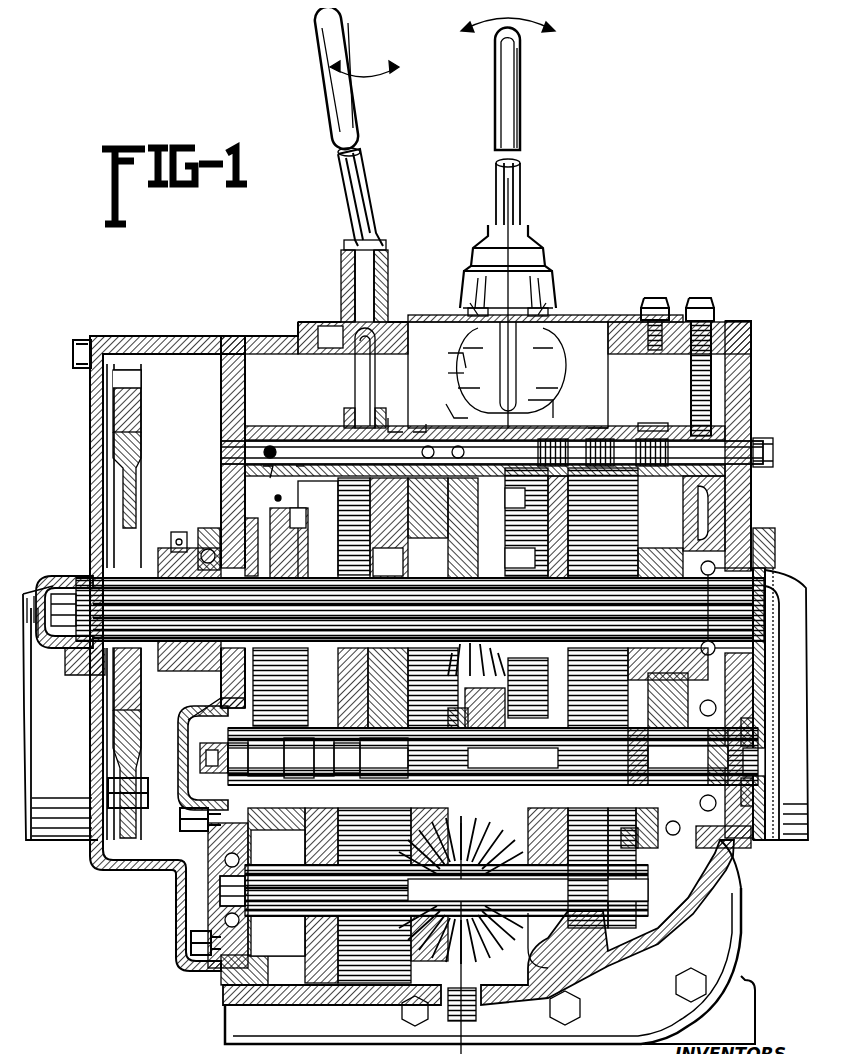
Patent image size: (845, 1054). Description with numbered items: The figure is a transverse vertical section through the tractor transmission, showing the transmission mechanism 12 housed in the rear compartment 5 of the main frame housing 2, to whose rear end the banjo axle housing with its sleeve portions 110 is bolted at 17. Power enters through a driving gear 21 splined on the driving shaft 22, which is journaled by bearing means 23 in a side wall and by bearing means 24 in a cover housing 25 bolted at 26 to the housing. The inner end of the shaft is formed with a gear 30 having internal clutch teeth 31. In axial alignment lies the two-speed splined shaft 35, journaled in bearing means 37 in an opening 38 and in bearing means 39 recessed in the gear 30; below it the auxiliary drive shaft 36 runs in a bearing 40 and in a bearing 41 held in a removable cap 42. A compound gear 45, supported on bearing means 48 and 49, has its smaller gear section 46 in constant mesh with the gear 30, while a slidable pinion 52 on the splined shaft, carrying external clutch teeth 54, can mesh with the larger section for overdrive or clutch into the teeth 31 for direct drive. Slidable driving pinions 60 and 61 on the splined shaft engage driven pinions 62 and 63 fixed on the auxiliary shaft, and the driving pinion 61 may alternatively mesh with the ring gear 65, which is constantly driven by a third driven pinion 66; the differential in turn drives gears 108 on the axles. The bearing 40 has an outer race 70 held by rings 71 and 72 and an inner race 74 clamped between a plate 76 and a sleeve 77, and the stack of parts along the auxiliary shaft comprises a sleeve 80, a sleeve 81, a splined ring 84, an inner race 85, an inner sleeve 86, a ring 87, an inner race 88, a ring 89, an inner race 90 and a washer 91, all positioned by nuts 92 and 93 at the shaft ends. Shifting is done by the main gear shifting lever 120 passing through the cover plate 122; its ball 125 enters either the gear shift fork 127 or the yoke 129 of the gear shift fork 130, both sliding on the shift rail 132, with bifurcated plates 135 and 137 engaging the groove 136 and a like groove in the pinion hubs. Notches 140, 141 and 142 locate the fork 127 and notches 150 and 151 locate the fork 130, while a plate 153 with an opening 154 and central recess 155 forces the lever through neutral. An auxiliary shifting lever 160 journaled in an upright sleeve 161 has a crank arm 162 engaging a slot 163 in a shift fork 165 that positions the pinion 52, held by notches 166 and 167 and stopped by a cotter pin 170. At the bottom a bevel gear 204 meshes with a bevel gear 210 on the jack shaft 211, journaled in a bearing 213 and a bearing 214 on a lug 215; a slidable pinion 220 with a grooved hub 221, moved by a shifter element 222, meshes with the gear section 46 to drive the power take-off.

The main frame or housing 2 is at (451, 1048).
The rear compartment 5 is at (640, 293).
The transmission mechanism 12 is at (706, 498).
The bolts 17 is at (668, 988).
The driving gear 21 is at (128, 411).
The driving shaft 22 is at (185, 546).
The bearing means 23 is at (198, 540).
The bearing means 24 is at (66, 662).
The cover housing 25 is at (88, 476).
The bolts 26 is at (64, 347).
The gear 30 is at (267, 491).
The internal clutch teeth 31 is at (298, 527).
The splined shaft 35 is at (322, 568).
The auxiliary drive shaft 36 is at (642, 746).
The bearing means 37 is at (713, 595).
The opening 38 is at (746, 533).
The bearing means 39 is at (290, 665).
The bearing 40 is at (740, 702).
The bearing 41 is at (238, 895).
The cap 42 is at (182, 713).
The compound gear 45 is at (338, 682).
The gear section 46 is at (276, 836).
The bearing means 48 is at (175, 797).
The bearing means 49 is at (343, 775).
The pinion 52 is at (341, 512).
The external clutch teeth 54 is at (341, 530).
The driving pinion 60 is at (498, 522).
The driving pinion 61 is at (628, 530).
The driven pinion 62 is at (475, 722).
The driven pinion 63 is at (660, 668).
The ring gear 65 is at (456, 488).
The third driven pinion 66 is at (526, 722).
The outer race 70 is at (694, 840).
The ring 71 is at (670, 830).
The ring 72 is at (748, 781).
The inner race 74 is at (694, 728).
The plate 76 is at (746, 725).
The sleeve 77 is at (657, 840).
The sleeve 80 is at (608, 822).
The sleeve 81 is at (428, 792).
The splined ring 84 is at (426, 680).
The inner race 85 is at (385, 775).
The inner sleeve 86 is at (324, 758).
The ring 87 is at (322, 706).
The inner race 88 is at (299, 758).
The ring 89 is at (266, 758).
The inner race 90 is at (236, 758).
The washer 91 is at (192, 704).
The nut 92 is at (190, 758).
The nut 93 is at (748, 753).
The drive gears 108 is at (344, 492).
The sleeve portions 110 is at (48, 826).
The main gear shifting lever 120 is at (503, 110).
The cover plate 122 is at (592, 308).
The ball 125 is at (530, 391).
The gear shift fork 127 is at (589, 421).
The yoke 129 is at (491, 372).
The gear shift fork 130 is at (405, 424).
The gear shifter rod or rail 132 is at (640, 436).
The bifurcated plate 135 is at (500, 556).
The groove 136 is at (585, 702).
The bifurcated plate 137 is at (498, 505).
The notch 140 is at (497, 452).
The notch 141 is at (602, 452).
The notch 142 is at (652, 452).
The notch 150 is at (440, 366).
The notch 151 is at (438, 396).
The plate 153 is at (586, 307).
The opening 154 is at (548, 305).
The central recess 155 is at (440, 350).
The auxiliary shifting lever 160 is at (347, 197).
The upright sleeve 161 is at (379, 264).
The crank arm 162 is at (346, 378).
The slot or depression 163 is at (338, 412).
The shift fork 165 is at (318, 422).
The notch 166 is at (259, 459).
The notch 167 is at (292, 468).
The cotter pin 170 is at (380, 410).
The bevel gear 204 is at (512, 942).
The bevel gear 210 is at (410, 940).
The jack shaft 211 is at (510, 916).
The bearing 213 is at (282, 912).
The bearing 214 is at (588, 956).
The lug 215 is at (630, 946).
The pinion 220 is at (300, 952).
The grooved hub 221 is at (331, 949).
The shifter element 222 is at (294, 836).